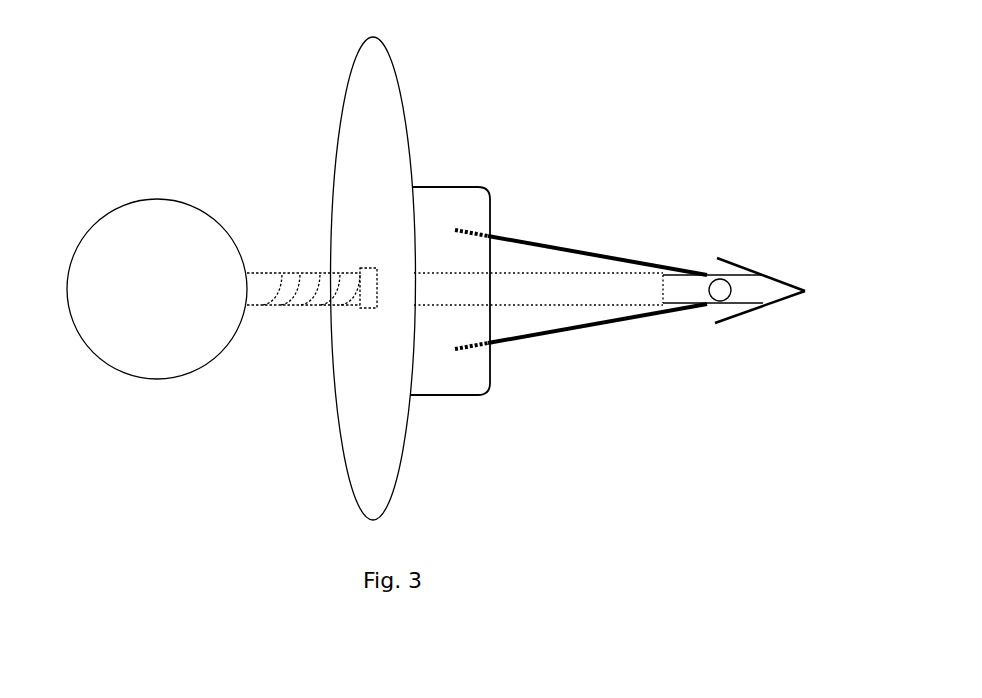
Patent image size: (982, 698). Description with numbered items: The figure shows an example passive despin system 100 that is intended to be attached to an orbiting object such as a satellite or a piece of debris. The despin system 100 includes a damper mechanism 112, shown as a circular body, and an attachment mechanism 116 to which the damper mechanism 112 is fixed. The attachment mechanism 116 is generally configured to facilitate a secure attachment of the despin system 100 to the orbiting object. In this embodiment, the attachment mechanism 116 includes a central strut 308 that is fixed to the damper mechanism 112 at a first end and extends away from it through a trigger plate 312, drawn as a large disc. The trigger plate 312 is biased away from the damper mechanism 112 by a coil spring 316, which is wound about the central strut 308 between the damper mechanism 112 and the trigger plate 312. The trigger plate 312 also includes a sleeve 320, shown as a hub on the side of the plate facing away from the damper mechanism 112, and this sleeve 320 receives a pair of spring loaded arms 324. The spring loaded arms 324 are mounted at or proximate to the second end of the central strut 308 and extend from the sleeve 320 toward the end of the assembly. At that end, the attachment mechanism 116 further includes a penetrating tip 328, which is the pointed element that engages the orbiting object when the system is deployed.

The despin system 100 is at (265, 36).
The damper mechanism 112 is at (112, 212).
The attachment mechanism 116 is at (590, 93).
The central strut 308 is at (265, 282).
The trigger plate 312 is at (352, 462).
The coil spring 316 is at (307, 307).
The sleeve 320 is at (452, 395).
The spring loaded arms 324 is at (563, 247).
The penetrating tip 328 is at (758, 305).